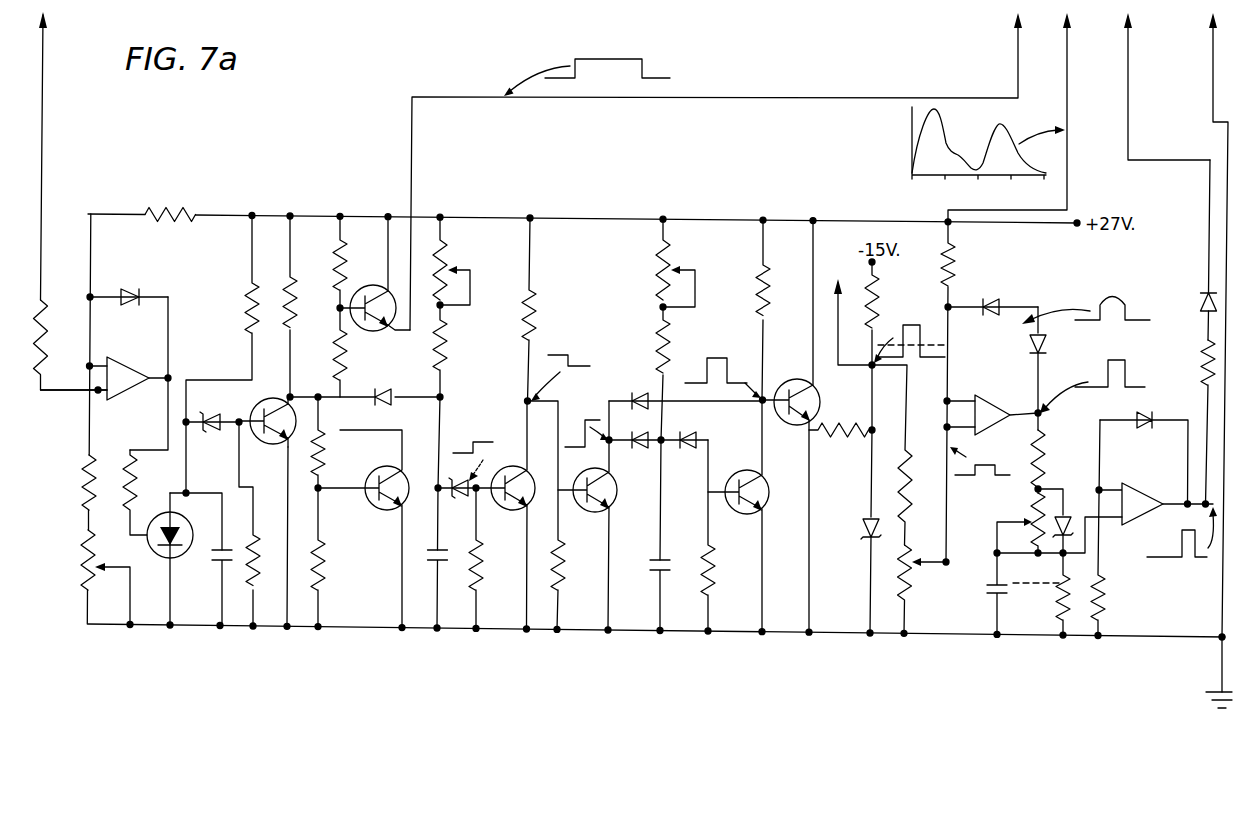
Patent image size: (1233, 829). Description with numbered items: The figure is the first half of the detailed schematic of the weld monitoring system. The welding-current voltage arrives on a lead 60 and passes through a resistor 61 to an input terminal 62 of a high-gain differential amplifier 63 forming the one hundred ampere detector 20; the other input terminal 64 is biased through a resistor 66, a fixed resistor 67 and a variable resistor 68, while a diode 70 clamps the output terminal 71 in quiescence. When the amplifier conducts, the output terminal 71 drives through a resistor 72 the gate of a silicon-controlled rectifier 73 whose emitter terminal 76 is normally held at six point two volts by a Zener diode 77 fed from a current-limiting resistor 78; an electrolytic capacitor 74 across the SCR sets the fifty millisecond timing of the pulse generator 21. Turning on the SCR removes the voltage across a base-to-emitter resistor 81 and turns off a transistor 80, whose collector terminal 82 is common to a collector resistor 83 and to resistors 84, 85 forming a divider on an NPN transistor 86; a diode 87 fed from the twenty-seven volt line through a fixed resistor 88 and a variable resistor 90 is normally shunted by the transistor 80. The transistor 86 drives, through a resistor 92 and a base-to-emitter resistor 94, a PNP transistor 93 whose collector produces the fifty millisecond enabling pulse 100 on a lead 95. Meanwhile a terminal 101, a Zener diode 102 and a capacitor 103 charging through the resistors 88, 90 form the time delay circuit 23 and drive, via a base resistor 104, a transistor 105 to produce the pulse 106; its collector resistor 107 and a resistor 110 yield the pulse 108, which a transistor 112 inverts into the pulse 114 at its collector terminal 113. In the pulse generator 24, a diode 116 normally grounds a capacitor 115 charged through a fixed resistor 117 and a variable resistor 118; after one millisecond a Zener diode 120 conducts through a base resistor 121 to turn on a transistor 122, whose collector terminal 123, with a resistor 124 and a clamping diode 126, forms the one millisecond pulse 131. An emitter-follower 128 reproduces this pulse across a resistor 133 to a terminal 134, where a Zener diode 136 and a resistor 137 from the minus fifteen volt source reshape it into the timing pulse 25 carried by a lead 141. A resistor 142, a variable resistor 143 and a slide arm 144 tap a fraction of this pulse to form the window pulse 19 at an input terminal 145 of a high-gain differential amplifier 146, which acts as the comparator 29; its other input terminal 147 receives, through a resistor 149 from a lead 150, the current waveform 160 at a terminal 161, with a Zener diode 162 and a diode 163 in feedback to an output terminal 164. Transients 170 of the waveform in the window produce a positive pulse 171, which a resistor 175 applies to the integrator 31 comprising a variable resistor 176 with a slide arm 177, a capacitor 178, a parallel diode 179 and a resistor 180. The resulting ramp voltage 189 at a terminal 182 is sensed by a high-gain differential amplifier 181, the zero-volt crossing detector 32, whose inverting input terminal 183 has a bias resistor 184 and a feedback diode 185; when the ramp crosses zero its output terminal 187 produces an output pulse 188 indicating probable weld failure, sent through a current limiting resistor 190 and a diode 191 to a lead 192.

The lead 60 is at (42, 148).
The resistor 61 is at (45, 322).
The resistor 66 is at (185, 210).
The diode 70 is at (133, 290).
The 100 ampere detector 20 is at (152, 333).
The high-gain differential amplifier 63 is at (128, 360).
The input terminal 64 is at (91, 364).
The input terminal 62 is at (98, 393).
The output terminal 71 is at (169, 376).
The fixed resistor 67 is at (92, 467).
The variable resistor 68 is at (91, 544).
The resistor 72 is at (136, 470).
The silicon-controlled rectifier 73 is at (166, 552).
The emitter terminal 76 is at (188, 491).
The electrolytic capacitor 74 is at (212, 568).
The pulse generator 21 is at (235, 588).
The Zener diode 77 is at (210, 415).
The current-limiting resistor 78 is at (256, 292).
The base-to-emitter resistor 81 is at (255, 560).
The terminal 82 is at (276, 399).
The transistor 80 is at (290, 445).
The collector resistor 83 is at (292, 298).
The resistor 84 is at (322, 455).
The resistor 85 is at (322, 560).
The NPN transistor 86 is at (400, 474).
The diode 87 is at (390, 402).
The base-to-emitter resistor 94 is at (344, 262).
The resistor 92 is at (344, 366).
The PNP transistor 93 is at (383, 335).
The lead 95 is at (412, 175).
The enabling pulse 100 is at (651, 63).
The variable resistor 90 is at (447, 256).
The fixed resistor 88 is at (447, 346).
The terminal 101 is at (436, 492).
The Zener diode 102 is at (464, 498).
The electrolytic capacitor 103 is at (430, 570).
The base resistor 104 is at (481, 575).
The time delay circuit 23 is at (467, 598).
The transistor 105 is at (514, 512).
The pulse 106 is at (478, 440).
The collector resistor 107 is at (535, 322).
The output pulse 108 is at (570, 355).
The resistor 110 is at (562, 575).
The transistor 112 is at (610, 500).
The pulse 114 is at (582, 428).
The diode 126 is at (640, 393).
The diode 116 is at (635, 431).
The collector terminal 113 is at (612, 443).
The Zener diode 120 is at (698, 436).
The variable resistor 118 is at (669, 250).
The fixed resistor 117 is at (660, 325).
The electrolytic capacitor 115 is at (652, 578).
The base resistor 121 is at (712, 568).
The transistor 122 is at (748, 512).
The resistor 124 is at (767, 278).
The pulse 131 is at (718, 357).
The collector terminal 123 is at (788, 392).
The emitter-follower 128 is at (821, 400).
The resistor 133 is at (840, 436).
The resistor 137 is at (876, 290).
The lead 141 is at (850, 312).
The terminal 134 is at (874, 370).
The Zener diode 136 is at (864, 535).
The timing pulse 25 is at (898, 330).
The resistor 142 is at (902, 478).
The comparator 29 is at (902, 446).
The variable resistor 143 is at (906, 583).
The slide arm 144 is at (932, 565).
The integrator 31 is at (990, 638).
The pulse generator 24 is at (656, 634).
The resistor 149 is at (954, 262).
The terminal 161 is at (950, 312).
The Zener diode 162 is at (1000, 306).
The diode 163 is at (1046, 345).
The high-gain differential amplifier 146 is at (990, 398).
The input terminal 147 is at (950, 403).
The input terminal 145 is at (945, 427).
The output terminal 164 is at (1035, 414).
The resistor 175 is at (1046, 442).
The diode 179 is at (1047, 482).
The variable resistor 176 is at (1034, 503).
The slide arm 177 is at (997, 520).
The ramp voltage 189 is at (1040, 585).
The terminal 182 is at (1066, 560).
The capacitor 178 is at (995, 598).
The resistor 180 is at (1060, 605).
The bias resistor 184 is at (1104, 612).
The signal inverting input terminal 183 is at (1101, 488).
The high-gain differential amplifier 181 is at (1145, 522).
The output terminal 187 is at (1176, 498).
The output voltage pulse 188 is at (1180, 548).
The zero-volt crossing detector 32 is at (1126, 567).
The diode 185 is at (1140, 426).
The pulse 171 is at (1128, 372).
The appearance of welding current waveform in window 170 is at (1128, 312).
The window pulse 19 is at (1000, 462).
The diode 191 is at (1196, 322).
The current limiting resistor 190 is at (1201, 395).
The lead 192 is at (1209, 187).
The lead 150 is at (1068, 182).
The waveform 160 is at (945, 135).